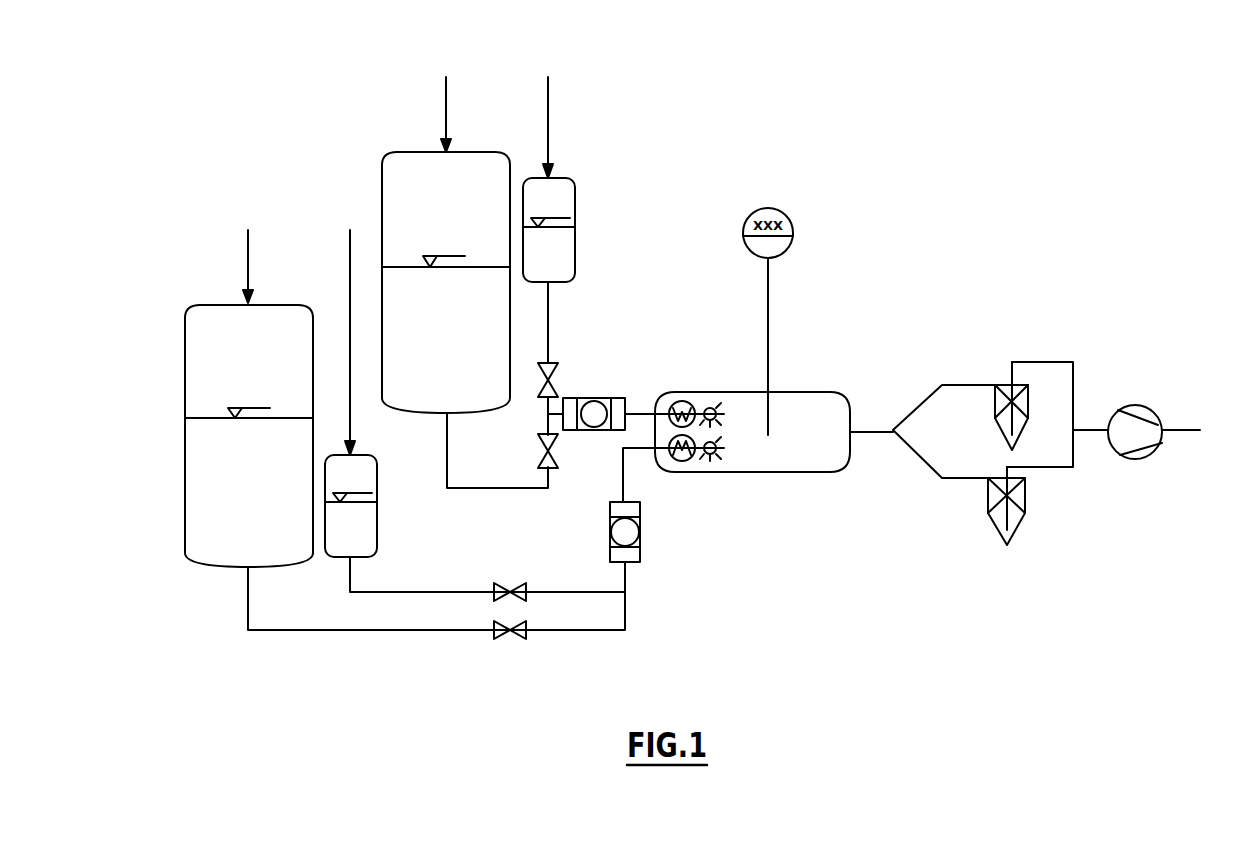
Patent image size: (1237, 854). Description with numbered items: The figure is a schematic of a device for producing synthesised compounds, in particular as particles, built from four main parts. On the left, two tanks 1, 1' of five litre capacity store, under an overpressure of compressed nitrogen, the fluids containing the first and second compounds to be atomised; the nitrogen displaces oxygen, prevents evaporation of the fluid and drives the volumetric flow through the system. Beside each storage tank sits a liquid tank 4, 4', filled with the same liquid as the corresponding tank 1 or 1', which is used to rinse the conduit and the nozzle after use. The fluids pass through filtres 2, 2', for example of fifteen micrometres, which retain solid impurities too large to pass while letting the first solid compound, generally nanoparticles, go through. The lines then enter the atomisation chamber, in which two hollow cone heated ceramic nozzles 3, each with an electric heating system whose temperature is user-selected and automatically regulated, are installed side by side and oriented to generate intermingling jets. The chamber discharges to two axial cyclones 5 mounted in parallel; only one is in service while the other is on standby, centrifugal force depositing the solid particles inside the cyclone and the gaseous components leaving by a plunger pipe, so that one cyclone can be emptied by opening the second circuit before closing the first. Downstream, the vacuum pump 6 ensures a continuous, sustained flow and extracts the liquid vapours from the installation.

The tank 1 is at (223, 398).
The tank 1' is at (428, 245).
The filtre 2 is at (642, 534).
The filtre 2' is at (594, 385).
The heated ceramic nozzle 3 is at (706, 400).
The liquid tank 4 is at (369, 393).
The liquid tank 4' is at (570, 179).
The axial cyclone 5 is at (992, 410).
The vacuum pump 6 is at (1142, 462).